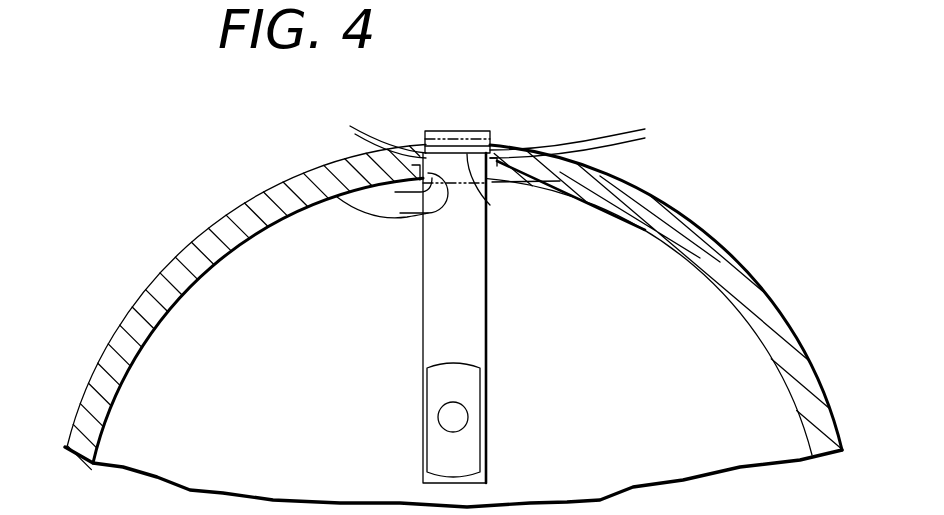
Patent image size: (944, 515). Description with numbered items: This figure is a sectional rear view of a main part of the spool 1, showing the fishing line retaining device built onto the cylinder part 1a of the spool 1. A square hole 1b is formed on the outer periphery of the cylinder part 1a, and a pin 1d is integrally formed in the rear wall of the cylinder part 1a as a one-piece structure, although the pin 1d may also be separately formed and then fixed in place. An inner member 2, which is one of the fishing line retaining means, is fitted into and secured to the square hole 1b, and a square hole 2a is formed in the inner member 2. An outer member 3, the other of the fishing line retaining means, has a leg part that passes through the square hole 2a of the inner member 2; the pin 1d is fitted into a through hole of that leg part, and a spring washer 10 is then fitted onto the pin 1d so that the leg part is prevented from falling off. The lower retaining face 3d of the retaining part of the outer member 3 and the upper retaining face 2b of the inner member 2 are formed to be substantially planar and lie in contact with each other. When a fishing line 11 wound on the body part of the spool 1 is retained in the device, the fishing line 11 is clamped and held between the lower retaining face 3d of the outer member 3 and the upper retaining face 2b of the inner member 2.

The spool 1 is at (453, 326).
The cylinder part 1a is at (185, 249).
The square hole 1b is at (347, 196).
The pin 1d is at (455, 415).
The inner member 2 is at (477, 152).
The square hole 2a is at (343, 165).
The upper retaining face 2b is at (510, 168).
The outer member 3 is at (470, 131).
The lower retaining face 3d is at (560, 195).
The spring washer 10 is at (472, 372).
The fishing line 11 is at (588, 141).